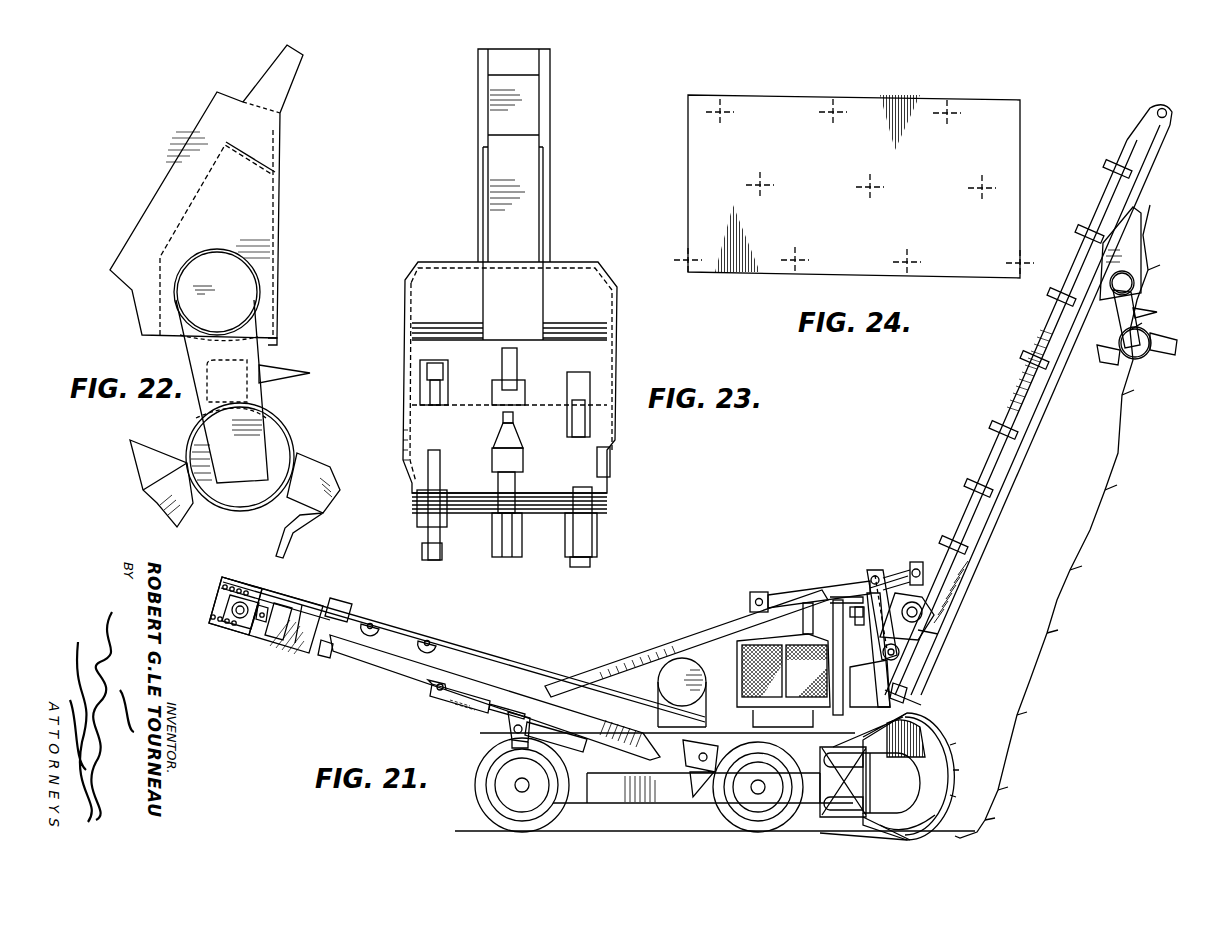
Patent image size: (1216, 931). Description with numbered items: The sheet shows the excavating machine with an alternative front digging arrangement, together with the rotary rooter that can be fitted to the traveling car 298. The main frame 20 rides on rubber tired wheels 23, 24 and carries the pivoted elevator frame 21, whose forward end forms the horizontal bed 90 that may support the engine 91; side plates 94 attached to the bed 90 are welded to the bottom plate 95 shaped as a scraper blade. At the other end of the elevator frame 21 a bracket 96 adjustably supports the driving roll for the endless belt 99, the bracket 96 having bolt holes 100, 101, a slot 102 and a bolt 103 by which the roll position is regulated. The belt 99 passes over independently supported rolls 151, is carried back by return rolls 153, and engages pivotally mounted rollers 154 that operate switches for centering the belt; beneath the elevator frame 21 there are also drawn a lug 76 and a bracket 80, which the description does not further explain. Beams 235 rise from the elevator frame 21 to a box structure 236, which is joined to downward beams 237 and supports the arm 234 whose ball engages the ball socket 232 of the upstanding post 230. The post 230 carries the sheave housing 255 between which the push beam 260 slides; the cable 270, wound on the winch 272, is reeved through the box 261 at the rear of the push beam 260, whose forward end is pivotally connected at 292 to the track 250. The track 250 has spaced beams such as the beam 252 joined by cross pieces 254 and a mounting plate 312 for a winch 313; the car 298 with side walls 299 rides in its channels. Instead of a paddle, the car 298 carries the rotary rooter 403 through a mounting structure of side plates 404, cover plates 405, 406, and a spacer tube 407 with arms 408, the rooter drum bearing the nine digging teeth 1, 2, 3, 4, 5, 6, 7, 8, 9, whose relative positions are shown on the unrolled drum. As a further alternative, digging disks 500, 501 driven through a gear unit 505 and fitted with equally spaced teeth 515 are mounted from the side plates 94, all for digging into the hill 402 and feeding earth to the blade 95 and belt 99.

In FIG. 22, the digging tooth 1 is at (302, 379).
In FIG. 23, the digging tooth 1 is at (440, 398).
In FIG. 24, the digging tooth 1 is at (854, 257).
In FIG. 23, the digging tooth 2 is at (572, 395).
In FIG. 24, the digging tooth 2 is at (721, 115).
In FIG. 23, the digging tooth 3 is at (513, 428).
In FIG. 24, the digging tooth 3 is at (761, 189).
In FIG. 22, the digging tooth 4 is at (322, 494).
In FIG. 23, the digging tooth 4 is at (432, 490).
In FIG. 24, the digging tooth 4 is at (797, 255).
In FIG. 23, the digging tooth 5 is at (582, 537).
In FIG. 24, the digging tooth 5 is at (834, 115).
In FIG. 23, the digging tooth 6 is at (505, 533).
In FIG. 24, the digging tooth 6 is at (871, 191).
In FIG. 22, the digging tooth 7 is at (170, 509).
In FIG. 24, the digging tooth 7 is at (909, 257).
In FIG. 24, the digging tooth 8 is at (948, 117).
In FIG. 23, the digging tooth 9 is at (511, 378).
In FIG. 24, the digging tooth 9 is at (983, 192).
In FIG. 21, the main frame 20 is at (625, 786).
In FIG. 21, the elevator frame 21 is at (623, 709).
In FIG. 21, the wheel 23 is at (558, 807).
In FIG. 21, the wheel 24 is at (728, 816).
In FIG. 21, the pivot lug 76 is at (512, 736).
In FIG. 21, the bracket 80 is at (510, 725).
In FIG. 21, the bed 90 is at (832, 743).
In FIG. 21, the engine 91 is at (741, 653).
In FIG. 21, the side plates 94 is at (909, 711).
In FIG. 21, the bottom plate 95 is at (937, 814).
In FIG. 21, the bracket 96 is at (312, 661).
In FIG. 21, the endless belt 99 is at (473, 650).
In FIG. 21, the bolt holes 100 is at (212, 624).
In FIG. 21, the bolt holes 101 is at (238, 583).
In FIG. 21, the slot 102 is at (277, 600).
In FIG. 21, the bolt 103 is at (258, 622).
In FIG. 21, the independently supported rolls 151 is at (378, 626).
In FIG. 21, the return rolls 153 is at (428, 689).
In FIG. 21, the pivotally mounted rollers 154 is at (346, 606).
In FIG. 21, the post 230 is at (920, 639).
In FIG. 21, the ball socket 232 is at (858, 618).
In FIG. 21, the arm 234 is at (874, 571).
In FIG. 21, the beams 235 is at (670, 643).
In FIG. 21, the box structure 236 is at (838, 599).
In FIG. 21, the beams 237 is at (847, 667).
In FIG. 21, the track 250 is at (1042, 418).
In FIG. 21, the beam 252 is at (1002, 474).
In FIG. 21, the cross pieces 254 is at (1007, 437).
In FIG. 21, the sheave housing 255 is at (915, 562).
In FIG. 21, the push beam 260 is at (856, 606).
In FIG. 21, the box 261 is at (757, 592).
In FIG. 21, the cable 270 is at (780, 594).
In FIG. 21, the winch 272 is at (903, 656).
In FIG. 21, the pivotal connection 292 is at (946, 570).
In FIG. 22, the car 298 is at (264, 121).
In FIG. 23, the car 298 is at (545, 117).
In FIG. 21, the car 298 is at (1135, 237).
In FIG. 22, the side walls 299 is at (162, 199).
In FIG. 21, the mounting plate 312 is at (930, 628).
In FIG. 21, the winch 313 is at (925, 612).
In FIG. 21, the hill 402 is at (1065, 521).
In FIG. 22, the rotary rooter 403 is at (298, 427).
In FIG. 23, the rotary rooter 403 is at (540, 527).
In FIG. 21, the rotary rooter 403 is at (1143, 306).
In FIG. 22, the side plates 404 is at (265, 212).
In FIG. 23, the side plates 404 is at (530, 224).
In FIG. 21, the side plates 404 is at (1130, 266).
In FIG. 22, the cover plate 405 is at (270, 288).
In FIG. 23, the cover plate 405 is at (532, 173).
In FIG. 22, the cover plate 406 is at (267, 345).
In FIG. 22, the spacer tube 407 is at (207, 260).
In FIG. 23, the spacer tube 407 is at (561, 268).
In FIG. 21, the spacer tube 407 is at (1130, 283).
In FIG. 22, the arms 408 is at (200, 351).
In FIG. 23, the arms 408 is at (405, 312).
In FIG. 21, the arms 408 is at (1125, 309).
In FIG. 21, the digging disk 500 is at (936, 734).
In FIG. 21, the digging disk 501 is at (830, 763).
In FIG. 21, the gear unit 505 is at (865, 810).
In FIG. 21, the teeth 515 is at (948, 780).